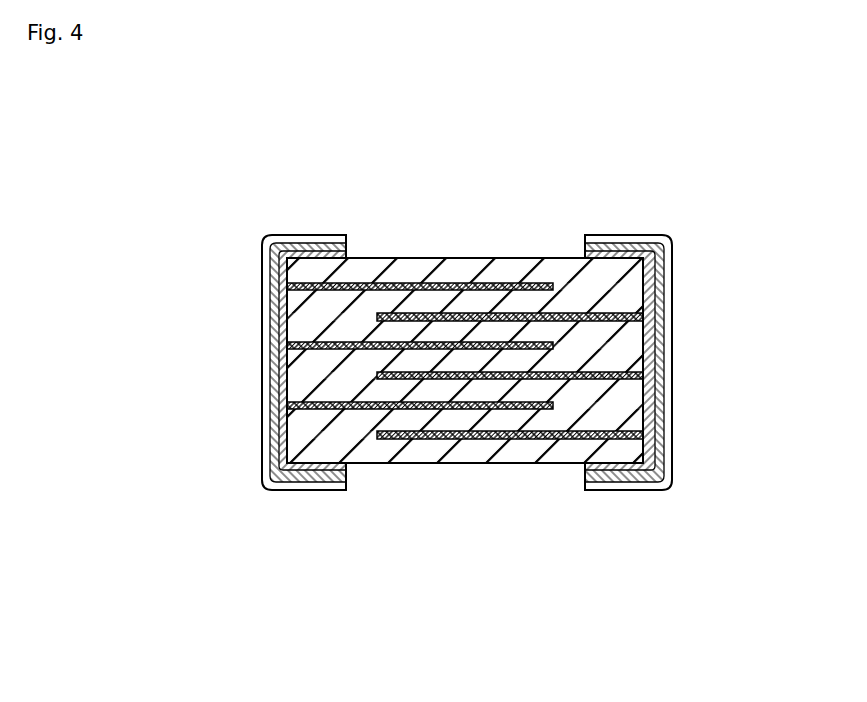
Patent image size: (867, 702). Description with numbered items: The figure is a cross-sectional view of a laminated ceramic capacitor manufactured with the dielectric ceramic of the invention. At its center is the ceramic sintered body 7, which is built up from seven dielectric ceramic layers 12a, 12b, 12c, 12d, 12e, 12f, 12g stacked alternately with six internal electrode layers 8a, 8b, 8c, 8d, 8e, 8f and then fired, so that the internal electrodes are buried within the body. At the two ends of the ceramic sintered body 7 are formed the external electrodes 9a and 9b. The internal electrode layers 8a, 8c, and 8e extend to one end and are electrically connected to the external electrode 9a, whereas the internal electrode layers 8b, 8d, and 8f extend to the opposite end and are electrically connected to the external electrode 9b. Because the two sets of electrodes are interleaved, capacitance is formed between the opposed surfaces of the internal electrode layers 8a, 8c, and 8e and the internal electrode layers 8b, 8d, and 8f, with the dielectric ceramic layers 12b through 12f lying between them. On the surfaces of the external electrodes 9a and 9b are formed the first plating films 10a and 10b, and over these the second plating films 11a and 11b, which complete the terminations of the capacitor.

The ceramic sintered body 7 is at (440, 258).
The internal electrode layer 8a is at (555, 287).
The internal electrode layer 8b is at (645, 317).
The internal electrode layer 8c is at (555, 346).
The internal electrode layer 8d is at (645, 376).
The internal electrode layer 8e is at (555, 405).
The internal electrode layer 8f is at (645, 435).
The external electrode 9a is at (272, 241).
The external electrode 9b is at (652, 272).
The first plating film 10a is at (274, 492).
The first plating film 10b is at (668, 463).
The second plating film 11a is at (318, 236).
The second plating film 11b is at (613, 234).
The dielectric ceramic layer 12a is at (312, 270).
The dielectric ceramic layer 12b is at (312, 302).
The dielectric ceramic layer 12c is at (312, 327).
The dielectric ceramic layer 12d is at (310, 357).
The dielectric ceramic layer 12e is at (308, 390).
The dielectric ceramic layer 12f is at (302, 421).
The dielectric ceramic layer 12g is at (300, 452).